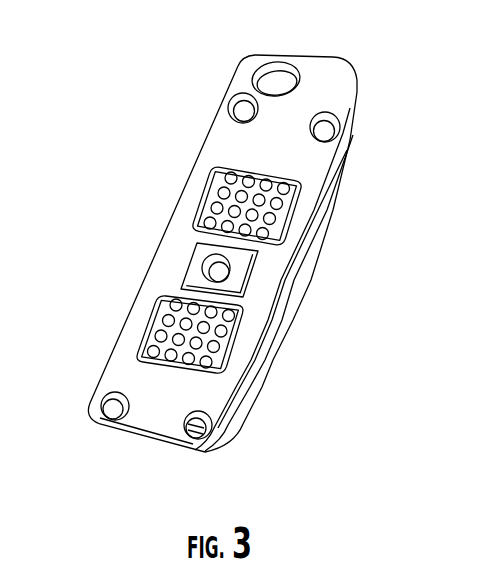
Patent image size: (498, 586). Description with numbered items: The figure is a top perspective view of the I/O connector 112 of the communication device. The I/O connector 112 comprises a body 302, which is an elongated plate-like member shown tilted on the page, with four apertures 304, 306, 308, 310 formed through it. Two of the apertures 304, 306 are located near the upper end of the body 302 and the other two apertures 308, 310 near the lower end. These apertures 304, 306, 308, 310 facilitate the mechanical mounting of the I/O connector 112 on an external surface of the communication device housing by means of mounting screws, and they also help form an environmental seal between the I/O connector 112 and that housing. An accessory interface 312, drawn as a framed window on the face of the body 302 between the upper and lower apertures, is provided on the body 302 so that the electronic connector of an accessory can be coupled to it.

The I/O connector 112 is at (118, 80).
The body 302 is at (152, 242).
The aperture 304 is at (232, 99).
The aperture 306 is at (337, 138).
The aperture 308 is at (108, 396).
The aperture 310 is at (210, 433).
The accessory interface 312 is at (224, 266).